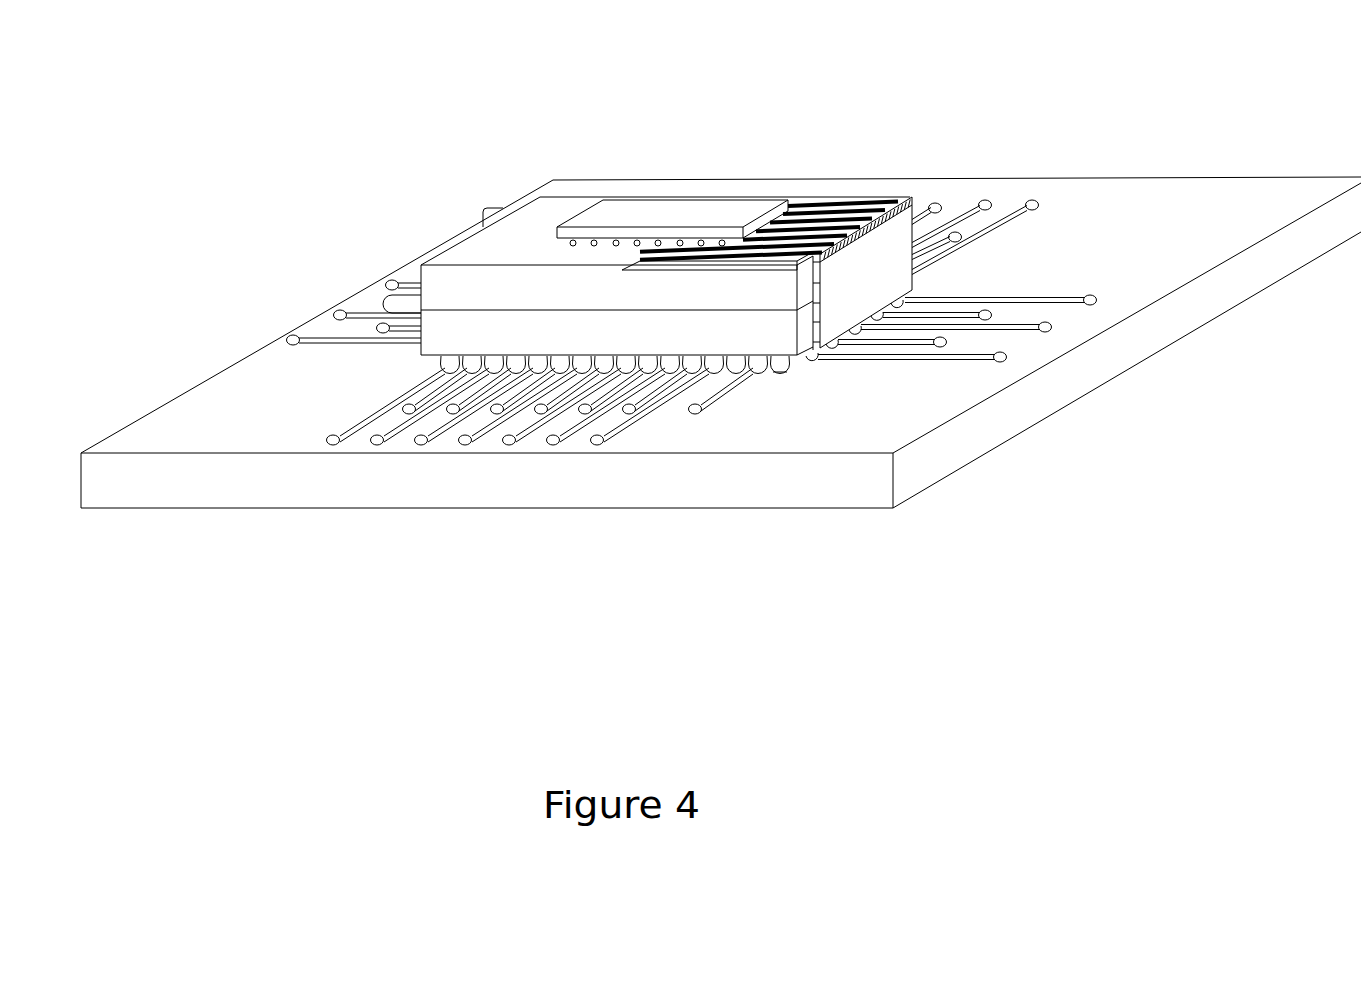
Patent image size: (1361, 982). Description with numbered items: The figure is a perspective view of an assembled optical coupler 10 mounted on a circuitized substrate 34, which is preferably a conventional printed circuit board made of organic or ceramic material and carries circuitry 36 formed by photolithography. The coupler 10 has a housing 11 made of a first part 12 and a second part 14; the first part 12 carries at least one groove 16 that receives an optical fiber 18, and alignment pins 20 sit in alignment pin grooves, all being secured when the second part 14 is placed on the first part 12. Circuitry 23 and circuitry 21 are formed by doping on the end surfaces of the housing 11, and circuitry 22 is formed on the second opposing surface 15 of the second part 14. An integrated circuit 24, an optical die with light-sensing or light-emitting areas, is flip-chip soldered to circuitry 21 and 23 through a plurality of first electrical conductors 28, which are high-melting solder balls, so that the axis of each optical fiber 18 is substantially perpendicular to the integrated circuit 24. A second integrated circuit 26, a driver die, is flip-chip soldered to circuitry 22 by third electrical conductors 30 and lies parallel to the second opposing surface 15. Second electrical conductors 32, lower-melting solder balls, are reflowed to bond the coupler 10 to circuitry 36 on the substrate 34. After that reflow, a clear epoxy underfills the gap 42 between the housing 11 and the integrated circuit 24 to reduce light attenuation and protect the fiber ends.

The optical coupler 10 is at (166, 106).
The housing 11 is at (536, 385).
The first part 12 is at (419, 338).
The second part 14 is at (819, 196).
The second opposing surface 15 is at (577, 205).
The groove 16 is at (815, 314).
The optical fiber 18 is at (826, 305).
The alignment pins 20 is at (478, 210).
The circuitry 21 is at (906, 202).
The circuitry 22 is at (807, 208).
The circuitry 23 is at (806, 346).
The integrated circuit 24 is at (920, 215).
The second integrated circuit 26 is at (565, 218).
The first electrical conductors 28 is at (815, 261).
The third electrical conductors 30 is at (625, 250).
The second electrical conductors 32 is at (583, 362).
The circuitized substrate 34 is at (1178, 175).
The circuitry 36 is at (776, 378).
The gap 42 is at (821, 287).